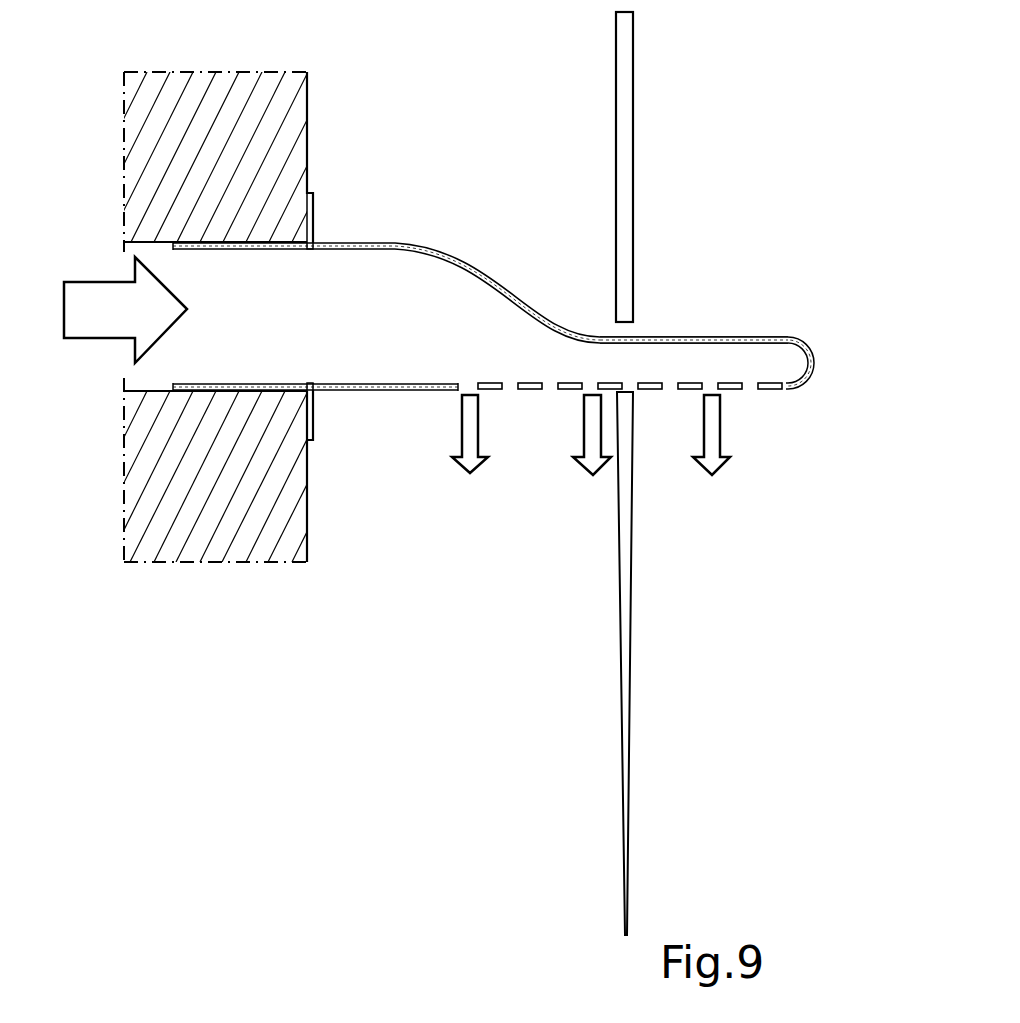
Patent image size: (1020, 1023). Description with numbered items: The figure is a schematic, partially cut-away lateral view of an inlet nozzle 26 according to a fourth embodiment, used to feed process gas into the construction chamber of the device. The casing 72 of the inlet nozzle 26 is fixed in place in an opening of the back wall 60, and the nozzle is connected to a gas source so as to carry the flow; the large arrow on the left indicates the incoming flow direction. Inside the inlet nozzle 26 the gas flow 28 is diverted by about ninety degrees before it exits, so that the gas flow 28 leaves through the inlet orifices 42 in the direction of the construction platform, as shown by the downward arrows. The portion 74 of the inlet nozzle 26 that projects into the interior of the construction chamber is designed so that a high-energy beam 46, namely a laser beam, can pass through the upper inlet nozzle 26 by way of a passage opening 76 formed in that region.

The inlet nozzle 26 is at (728, 208).
The gas flow 28 is at (464, 440).
The inlet orifices 42 is at (466, 382).
The high-energy beam 46 is at (628, 114).
The back wall 60 is at (248, 545).
The casing 72 is at (396, 242).
The portion of the inlet nozzle 74 is at (557, 262).
The passage opening 76 is at (664, 336).